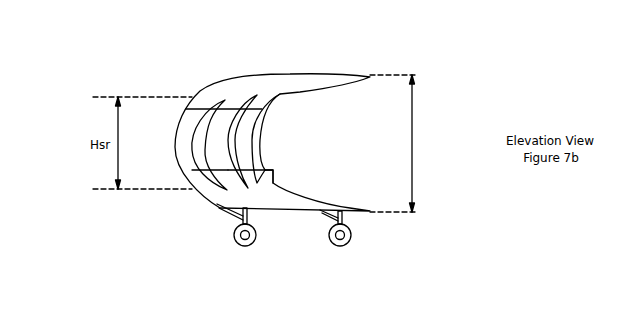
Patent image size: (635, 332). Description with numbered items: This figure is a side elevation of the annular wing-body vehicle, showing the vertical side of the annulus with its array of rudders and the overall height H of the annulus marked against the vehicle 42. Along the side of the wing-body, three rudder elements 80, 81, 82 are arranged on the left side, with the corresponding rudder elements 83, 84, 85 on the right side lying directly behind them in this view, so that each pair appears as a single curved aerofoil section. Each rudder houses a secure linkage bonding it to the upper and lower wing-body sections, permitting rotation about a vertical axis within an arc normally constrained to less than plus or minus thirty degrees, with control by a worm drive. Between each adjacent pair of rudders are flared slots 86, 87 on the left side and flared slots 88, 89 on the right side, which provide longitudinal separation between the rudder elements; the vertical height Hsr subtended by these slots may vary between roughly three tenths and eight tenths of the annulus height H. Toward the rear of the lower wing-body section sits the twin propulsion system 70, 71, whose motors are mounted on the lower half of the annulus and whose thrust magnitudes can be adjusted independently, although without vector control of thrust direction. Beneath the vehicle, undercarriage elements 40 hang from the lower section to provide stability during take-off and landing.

The undercarriage element 40 is at (255, 238).
The sail assembly height reference 42 is at (413, 130).
The propulsion system 70 is at (316, 162).
The propulsion system 71 is at (273, 178).
The rudder element 80 is at (155, 118).
The rudder element 81 is at (197, 104).
The rudder element 82 is at (304, 138).
The rudder element 83 is at (185, 128).
The rudder element 84 is at (220, 122).
The rudder element 85 is at (248, 149).
The flared slot 86 is at (165, 209).
The flared slot 87 is at (206, 217).
The flared slot 88 is at (200, 167).
The flared slot 89 is at (232, 162).